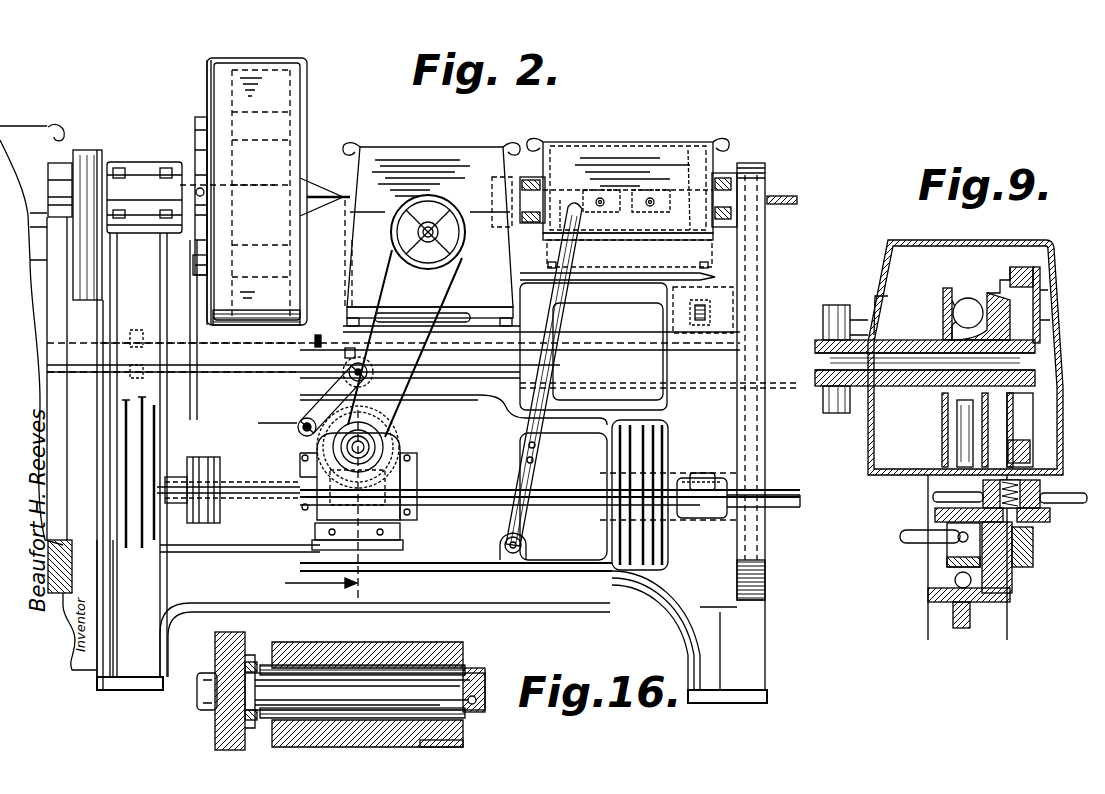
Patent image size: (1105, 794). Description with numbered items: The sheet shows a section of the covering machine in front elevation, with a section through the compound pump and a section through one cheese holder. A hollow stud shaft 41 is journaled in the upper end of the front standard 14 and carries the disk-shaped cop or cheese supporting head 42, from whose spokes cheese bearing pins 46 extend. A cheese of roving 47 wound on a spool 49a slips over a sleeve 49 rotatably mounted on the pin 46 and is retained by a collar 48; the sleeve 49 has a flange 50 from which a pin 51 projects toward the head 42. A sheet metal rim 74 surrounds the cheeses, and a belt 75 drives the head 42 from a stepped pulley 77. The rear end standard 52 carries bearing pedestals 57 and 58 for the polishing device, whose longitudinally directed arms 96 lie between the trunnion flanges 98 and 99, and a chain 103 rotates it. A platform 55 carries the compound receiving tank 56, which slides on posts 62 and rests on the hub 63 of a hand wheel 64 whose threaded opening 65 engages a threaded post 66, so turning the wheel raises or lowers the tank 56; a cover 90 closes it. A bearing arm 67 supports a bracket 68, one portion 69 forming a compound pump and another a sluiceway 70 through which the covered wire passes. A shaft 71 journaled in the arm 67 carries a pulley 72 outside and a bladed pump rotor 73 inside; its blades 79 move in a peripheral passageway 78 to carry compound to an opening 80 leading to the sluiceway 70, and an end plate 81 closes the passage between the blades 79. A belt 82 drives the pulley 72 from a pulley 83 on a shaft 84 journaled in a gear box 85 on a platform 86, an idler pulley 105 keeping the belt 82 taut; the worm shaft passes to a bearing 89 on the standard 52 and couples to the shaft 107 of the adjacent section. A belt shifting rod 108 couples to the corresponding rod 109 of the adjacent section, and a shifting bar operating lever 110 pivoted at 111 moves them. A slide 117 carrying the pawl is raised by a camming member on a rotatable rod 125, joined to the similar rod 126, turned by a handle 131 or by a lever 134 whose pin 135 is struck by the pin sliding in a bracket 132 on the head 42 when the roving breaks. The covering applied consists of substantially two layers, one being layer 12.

In FIG. 2, the insulating covering layer 12 is at (525, 390).
In FIG. 2, the front standard 14 is at (143, 272).
In FIG. 2, the hollow stud shaft 41 is at (146, 186).
In FIG. 16, the cop or cheese supporting head 42 is at (225, 650).
In FIG. 16, the cop or cheese bearing pin 46 is at (470, 680).
In FIG. 2, the roving 47 is at (322, 178).
In FIG. 16, the collar 48 is at (485, 680).
In FIG. 16, the sleeve 49 is at (392, 655).
In FIG. 16, the spool 49a is at (465, 733).
In FIG. 16, the flange 50 is at (278, 740).
In FIG. 16, the pin 51 is at (252, 660).
In FIG. 2, the rear end standard 52 is at (645, 398).
In FIG. 2, the platform 55 is at (538, 429).
In FIG. 9, the platform 55 is at (935, 523).
In FIG. 2, the compound receiving tank 56 is at (365, 228).
In FIG. 2, the bearing pedestal 57 is at (528, 200).
In FIG. 2, the bearing pedestal 58 is at (60, 163).
In FIG. 2, the post 62 is at (553, 317).
In FIG. 9, the post 62 is at (960, 478).
In FIG. 2, the hub 63 is at (478, 420).
In FIG. 9, the hub 63 is at (935, 490).
In FIG. 2, the hand wheel 64 is at (460, 317).
In FIG. 9, the hand wheel 64 is at (1080, 504).
In FIG. 9, the threaded opening 65 is at (1030, 488).
In FIG. 9, the threaded post 66 is at (935, 512).
In FIG. 9, the bearing arm 67 is at (860, 338).
In FIG. 9, the bracket 68 is at (946, 330).
In FIG. 9, the pump portion 69 is at (1022, 267).
In FIG. 9, the sluiceway 70 is at (970, 303).
In FIG. 2, the shaft 71 is at (438, 233).
In FIG. 9, the shaft 71 is at (862, 390).
In FIG. 2, the pulley 72 is at (420, 258).
In FIG. 9, the pulley 72 is at (828, 413).
In FIG. 9, the bladed pump rotor 73 is at (1040, 380).
In FIG. 2, the sheet metal rim 74 is at (285, 93).
In FIG. 2, the belt 75 is at (215, 82).
In FIG. 2, the pulley 77 is at (215, 462).
In FIG. 9, the peripheral passageway 78 is at (1042, 282).
In FIG. 9, the blades 79 is at (1032, 450).
In FIG. 9, the opening 80 is at (1000, 290).
In FIG. 9, the end plate 81 is at (1042, 320).
In FIG. 2, the belt 82 is at (455, 255).
In FIG. 2, the pulley 83 is at (367, 447).
In FIG. 2, the shaft 84 is at (345, 452).
In FIG. 2, the gear box 85 is at (380, 500).
In FIG. 2, the platform 86 is at (385, 547).
In FIG. 2, the bearing 89 is at (703, 480).
In FIG. 2, the cover 90 is at (415, 155).
In FIG. 9, the cover 90 is at (923, 242).
In FIG. 2, the longitudinally directed arm 96 is at (625, 190).
In FIG. 2, the flange 98 is at (565, 185).
In FIG. 2, the flange 99 is at (690, 165).
In FIG. 2, the chain 103 is at (740, 367).
In FIG. 2, the idler pulley 105 is at (370, 363).
In FIG. 2, the shaft 107 is at (483, 492).
In FIG. 9, the belt shifting rod 108 is at (1010, 590).
In FIG. 2, the shifting rod 109 is at (285, 382).
In FIG. 2, the shifting bar operating lever 110 is at (536, 458).
In FIG. 2, the pivot 111 is at (522, 545).
In FIG. 9, the slide 117 is at (947, 555).
In FIG. 9, the rotatable rod 125 is at (1033, 555).
In FIG. 2, the rod 126 is at (322, 345).
In FIG. 2, the handle 131 is at (332, 363).
In FIG. 9, the handle 131 is at (905, 540).
In FIG. 2, the bracket 132 is at (200, 120).
In FIG. 2, the lever 134 is at (190, 290).
In FIG. 2, the pin 135 is at (200, 268).